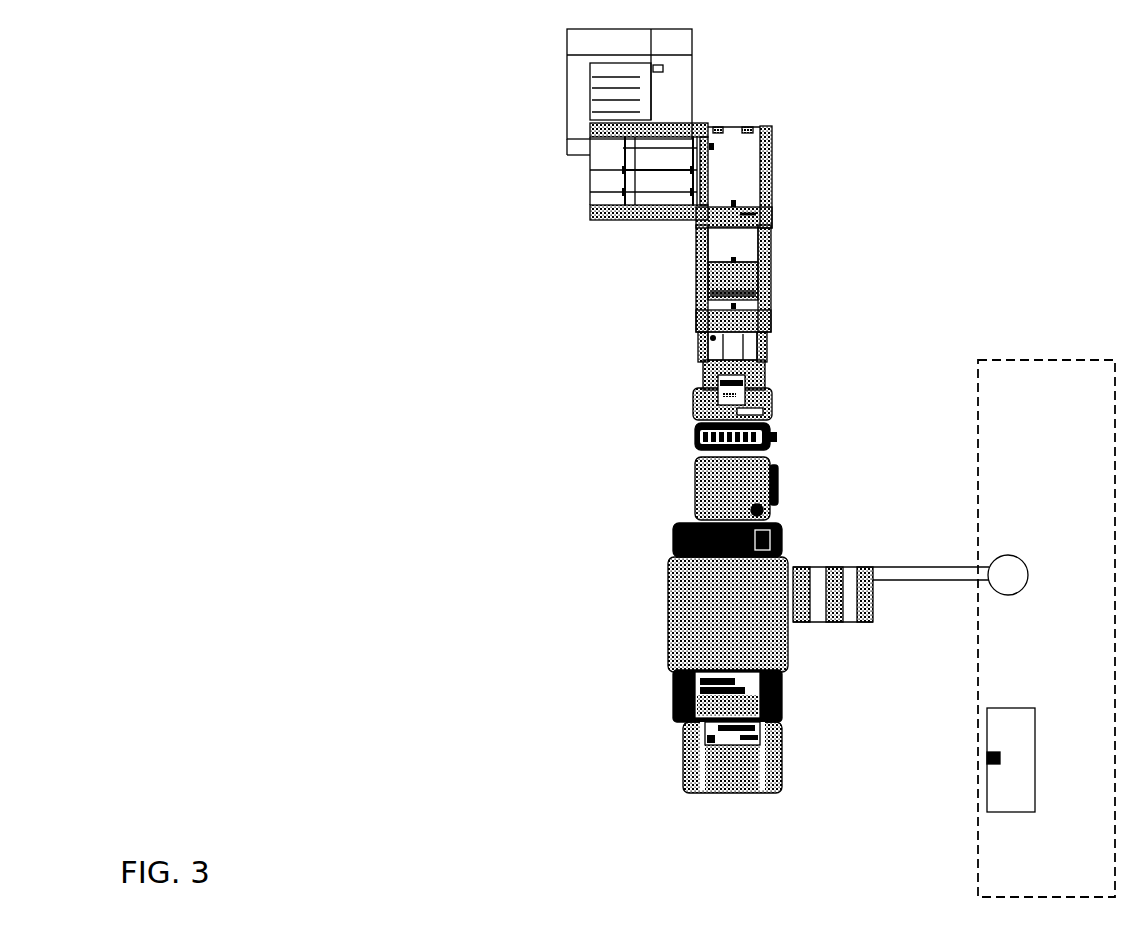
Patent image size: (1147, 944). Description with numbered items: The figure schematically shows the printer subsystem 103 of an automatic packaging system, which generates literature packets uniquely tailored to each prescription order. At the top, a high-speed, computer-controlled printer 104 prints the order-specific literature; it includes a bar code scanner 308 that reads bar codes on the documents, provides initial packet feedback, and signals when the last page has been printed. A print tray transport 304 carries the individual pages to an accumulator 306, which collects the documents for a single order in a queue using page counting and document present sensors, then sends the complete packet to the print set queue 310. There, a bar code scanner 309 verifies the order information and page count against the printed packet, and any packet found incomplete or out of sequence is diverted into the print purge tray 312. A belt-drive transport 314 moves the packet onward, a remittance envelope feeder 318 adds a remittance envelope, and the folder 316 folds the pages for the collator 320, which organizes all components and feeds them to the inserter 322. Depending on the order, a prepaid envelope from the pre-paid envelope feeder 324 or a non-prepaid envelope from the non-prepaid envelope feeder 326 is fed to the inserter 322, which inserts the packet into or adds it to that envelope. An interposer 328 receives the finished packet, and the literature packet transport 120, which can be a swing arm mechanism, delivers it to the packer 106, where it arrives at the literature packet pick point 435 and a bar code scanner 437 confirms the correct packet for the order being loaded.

The printer subsystem 103 is at (438, 474).
The printer 104 is at (548, 68).
The packer 106 is at (1040, 354).
The literature packet transport 120 is at (896, 558).
The print tray transport 304 is at (653, 190).
The accumulator 306 is at (740, 158).
The bar code scanner 308 is at (643, 136).
The bar code scanner 309 is at (745, 213).
The print set queue 310 is at (745, 243).
The print purge tray 312 is at (703, 275).
The belt-drive transport 314 is at (733, 346).
The folder 316 is at (777, 437).
The remittance envelope feeder 318 is at (699, 408).
The collator 320 is at (712, 485).
The inserter 322 is at (680, 594).
The pre-paid envelope feeder 324 is at (727, 790).
The non-prepaid envelope feeder 326 is at (683, 722).
The interposer 328 is at (803, 567).
The literature packet pick point 435 is at (1025, 800).
The bar code scanner 437 is at (1000, 758).